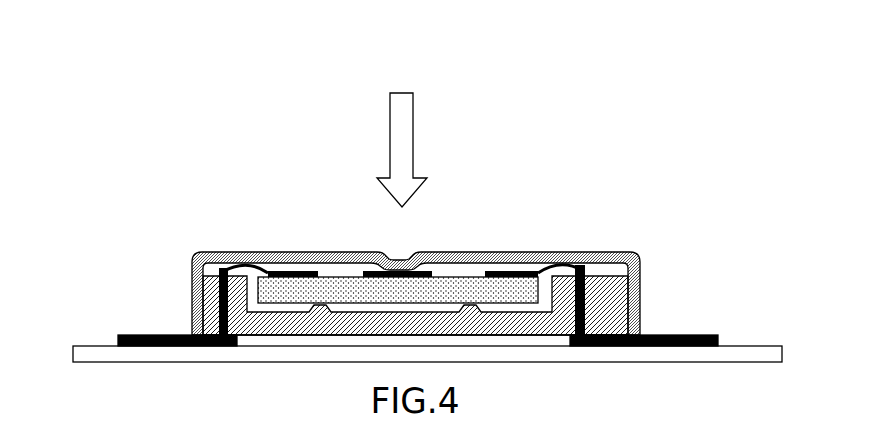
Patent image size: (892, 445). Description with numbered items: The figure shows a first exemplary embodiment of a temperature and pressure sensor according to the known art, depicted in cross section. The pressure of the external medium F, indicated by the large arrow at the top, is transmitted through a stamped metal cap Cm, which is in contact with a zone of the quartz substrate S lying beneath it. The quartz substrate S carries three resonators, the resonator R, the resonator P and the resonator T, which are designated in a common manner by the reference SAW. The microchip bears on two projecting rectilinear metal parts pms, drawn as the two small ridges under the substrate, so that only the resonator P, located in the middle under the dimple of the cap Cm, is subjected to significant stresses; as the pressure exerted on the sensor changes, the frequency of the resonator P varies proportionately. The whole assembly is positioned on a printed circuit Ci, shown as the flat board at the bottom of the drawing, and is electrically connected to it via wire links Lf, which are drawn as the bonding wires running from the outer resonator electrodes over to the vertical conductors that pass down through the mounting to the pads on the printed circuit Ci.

The pressure of the external medium F is at (402, 138).
The stamped metal cap Cm is at (399, 257).
The quartz substrate S is at (456, 287).
The surface acoustic wave resonators SAW is at (429, 248).
The resonator R is at (293, 285).
The resonator P is at (397, 284).
The resonator T is at (511, 284).
The wire links Lf is at (588, 268).
The printed circuit Ci is at (740, 356).
The projecting rectilinear metal parts pms is at (318, 312).